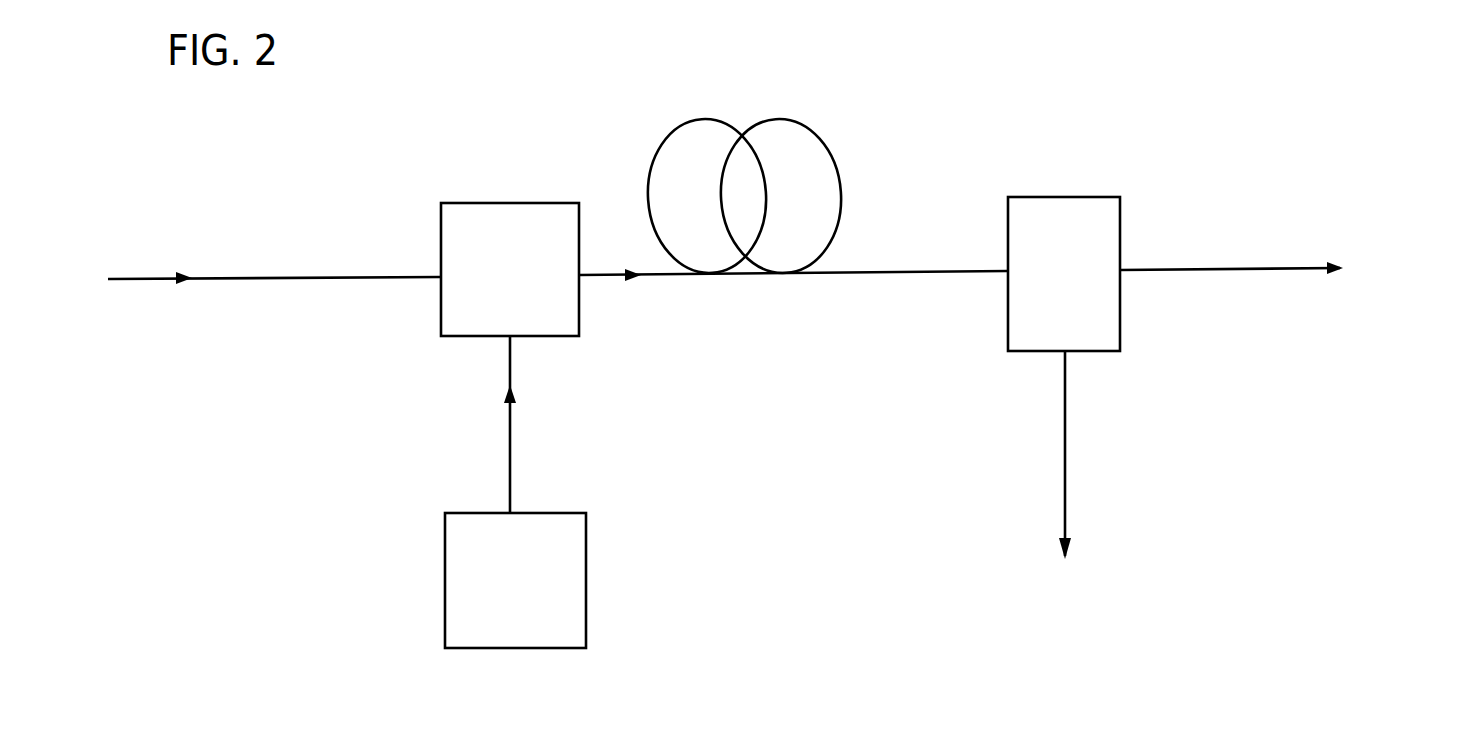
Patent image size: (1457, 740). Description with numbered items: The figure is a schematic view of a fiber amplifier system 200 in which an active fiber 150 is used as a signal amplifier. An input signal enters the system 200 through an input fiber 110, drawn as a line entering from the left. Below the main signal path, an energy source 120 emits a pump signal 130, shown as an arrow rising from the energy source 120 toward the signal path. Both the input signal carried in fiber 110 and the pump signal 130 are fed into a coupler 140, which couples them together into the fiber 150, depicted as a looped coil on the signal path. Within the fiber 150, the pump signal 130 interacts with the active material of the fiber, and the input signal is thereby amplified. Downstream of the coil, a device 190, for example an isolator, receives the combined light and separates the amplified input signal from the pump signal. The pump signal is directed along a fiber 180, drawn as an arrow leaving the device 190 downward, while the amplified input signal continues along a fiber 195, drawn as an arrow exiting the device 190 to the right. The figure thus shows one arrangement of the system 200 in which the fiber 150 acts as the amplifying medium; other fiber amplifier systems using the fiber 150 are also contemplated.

The fiber 110 is at (243, 277).
The energy source 120 is at (533, 598).
The pump signal 130 is at (512, 454).
The coupler 140 is at (529, 288).
The fiber 150 is at (729, 122).
The fiber 180 is at (1067, 460).
The device 190 is at (1084, 295).
The fiber 195 is at (1172, 267).
The fiber amplifier system 200 is at (1350, 184).